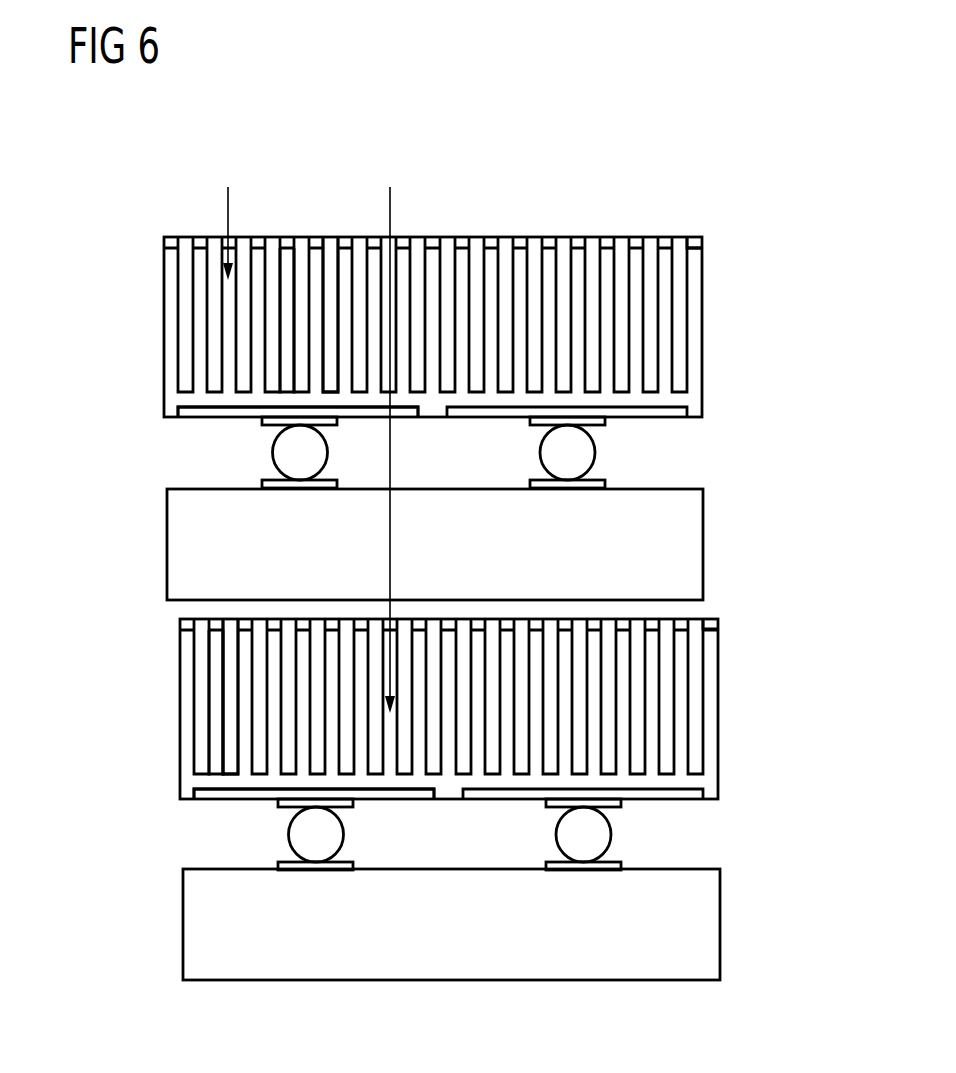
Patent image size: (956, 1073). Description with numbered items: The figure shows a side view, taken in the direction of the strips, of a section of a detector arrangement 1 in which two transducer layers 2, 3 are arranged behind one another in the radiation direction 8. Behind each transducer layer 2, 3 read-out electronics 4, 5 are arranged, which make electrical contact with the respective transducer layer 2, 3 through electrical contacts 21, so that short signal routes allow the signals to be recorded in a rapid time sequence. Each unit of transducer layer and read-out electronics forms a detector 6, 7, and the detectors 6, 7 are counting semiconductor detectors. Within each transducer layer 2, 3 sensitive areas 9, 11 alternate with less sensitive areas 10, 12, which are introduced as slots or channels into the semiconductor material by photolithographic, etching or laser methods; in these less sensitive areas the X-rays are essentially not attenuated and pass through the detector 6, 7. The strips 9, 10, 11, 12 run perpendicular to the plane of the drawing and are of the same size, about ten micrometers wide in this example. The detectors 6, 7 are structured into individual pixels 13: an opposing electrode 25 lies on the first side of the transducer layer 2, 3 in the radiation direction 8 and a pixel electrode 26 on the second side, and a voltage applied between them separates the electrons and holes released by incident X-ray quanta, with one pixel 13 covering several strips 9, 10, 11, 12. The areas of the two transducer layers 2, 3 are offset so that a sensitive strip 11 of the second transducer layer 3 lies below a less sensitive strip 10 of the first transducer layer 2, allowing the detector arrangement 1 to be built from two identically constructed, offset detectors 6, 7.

The detector arrangement 1 is at (728, 97).
The first transducer layer 2 is at (143, 238).
The second transducer layer 3 is at (125, 622).
The read-out electronics 4 is at (167, 543).
The read-out electronics 5 is at (183, 927).
The detector 6 is at (740, 233).
The detector 7 is at (745, 615).
The radiation direction 8 is at (390, 202).
The sensitive strip 9 is at (288, 258).
The less sensitive strip 10 is at (330, 257).
The sensitive strip 11 is at (217, 653).
The less sensitive strip 12 is at (233, 697).
The pixel 13 is at (212, 438).
The electrical contact 21 is at (595, 450).
The opposing electrode 25 is at (692, 233).
The pixel electrode 26 is at (360, 410).